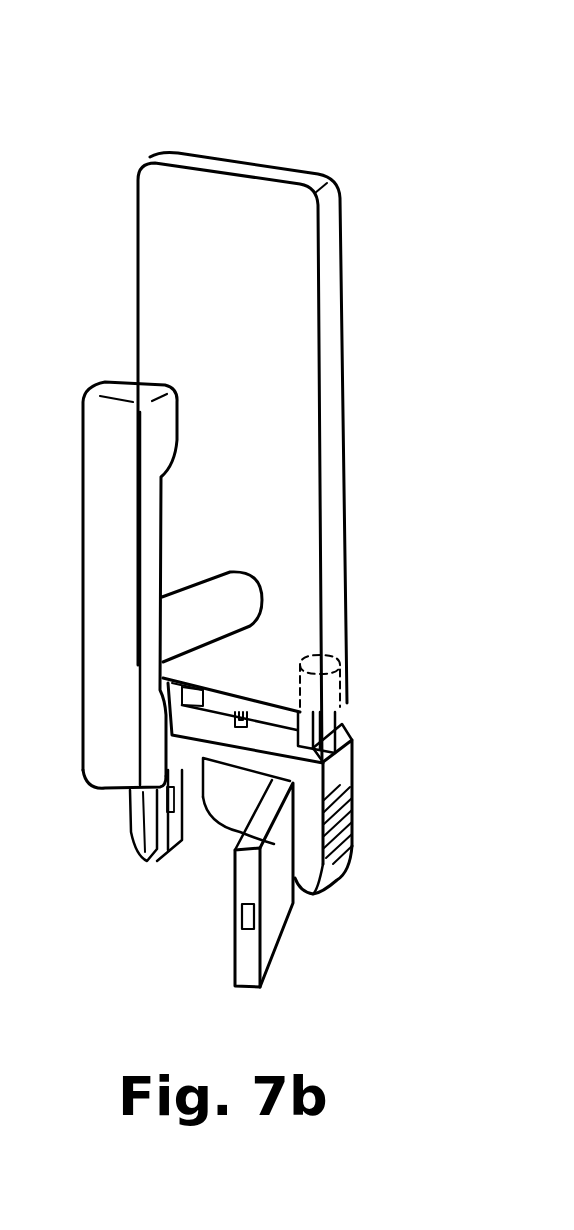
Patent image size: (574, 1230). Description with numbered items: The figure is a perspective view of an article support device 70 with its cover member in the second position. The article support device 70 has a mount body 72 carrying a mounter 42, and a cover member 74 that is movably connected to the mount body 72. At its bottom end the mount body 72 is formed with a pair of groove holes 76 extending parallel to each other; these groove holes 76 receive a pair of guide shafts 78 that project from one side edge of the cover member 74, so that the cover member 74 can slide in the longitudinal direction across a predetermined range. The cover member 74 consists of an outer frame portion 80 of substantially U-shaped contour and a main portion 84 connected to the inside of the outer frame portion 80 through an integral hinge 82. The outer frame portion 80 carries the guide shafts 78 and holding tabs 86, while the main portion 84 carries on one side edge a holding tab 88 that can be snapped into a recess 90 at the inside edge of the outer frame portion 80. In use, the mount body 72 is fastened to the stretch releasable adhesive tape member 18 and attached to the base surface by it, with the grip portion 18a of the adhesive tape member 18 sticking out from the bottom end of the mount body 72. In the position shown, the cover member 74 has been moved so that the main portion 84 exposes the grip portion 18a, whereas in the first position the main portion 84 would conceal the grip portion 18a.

The article support device 70 is at (255, 128).
The mount body 72 is at (166, 230).
The mounter 42 is at (104, 418).
The cover member 74 is at (131, 828).
The recess 90 is at (151, 846).
The adhesive tape member 18 is at (207, 812).
The grip portion 18a is at (238, 806).
The guide shafts 78 is at (338, 725).
The holding tabs 86 is at (241, 708).
The groove holes 76 is at (352, 666).
The outer frame portion 80 is at (338, 862).
The integral hinge 82 is at (296, 866).
The main portion 84 is at (274, 913).
The holding tab 88 is at (238, 921).